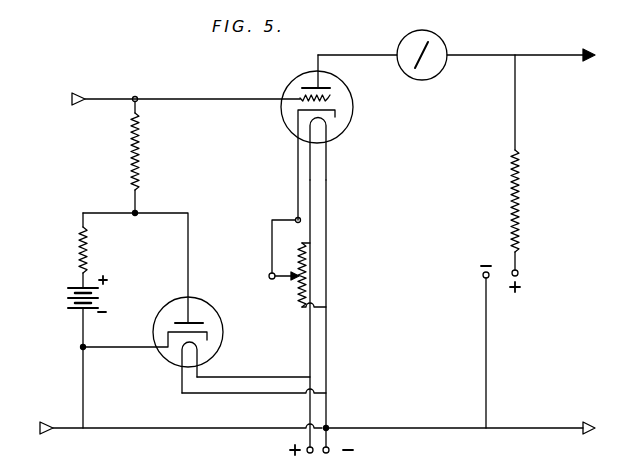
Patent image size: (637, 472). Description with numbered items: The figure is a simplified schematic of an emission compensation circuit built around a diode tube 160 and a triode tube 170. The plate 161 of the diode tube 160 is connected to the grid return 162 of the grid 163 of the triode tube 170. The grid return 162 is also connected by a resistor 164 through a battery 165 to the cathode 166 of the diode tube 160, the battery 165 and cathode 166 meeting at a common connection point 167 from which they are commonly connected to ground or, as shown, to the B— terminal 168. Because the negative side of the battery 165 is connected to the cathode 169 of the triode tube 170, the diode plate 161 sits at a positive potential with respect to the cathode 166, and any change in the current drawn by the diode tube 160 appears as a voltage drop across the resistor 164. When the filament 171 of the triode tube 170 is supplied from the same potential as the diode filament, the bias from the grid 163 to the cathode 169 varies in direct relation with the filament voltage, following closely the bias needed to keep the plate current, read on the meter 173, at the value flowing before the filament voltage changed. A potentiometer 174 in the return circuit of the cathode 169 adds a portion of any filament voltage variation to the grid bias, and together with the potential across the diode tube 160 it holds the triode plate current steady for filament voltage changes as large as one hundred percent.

The diode tube 160 is at (176, 337).
The plate 161 is at (200, 313).
The grid return 162 is at (137, 212).
The grid 163 is at (297, 96).
The resistor 164 is at (77, 242).
The battery 165 is at (67, 291).
The cathode 166 is at (216, 338).
The junction / connection point 167 is at (86, 354).
The B— terminal 168 is at (482, 278).
The cathode 169 is at (297, 112).
The triode tube 170 is at (314, 137).
The filament 171 is at (326, 133).
The meter 173 is at (444, 49).
The potentiometer 174 is at (272, 275).